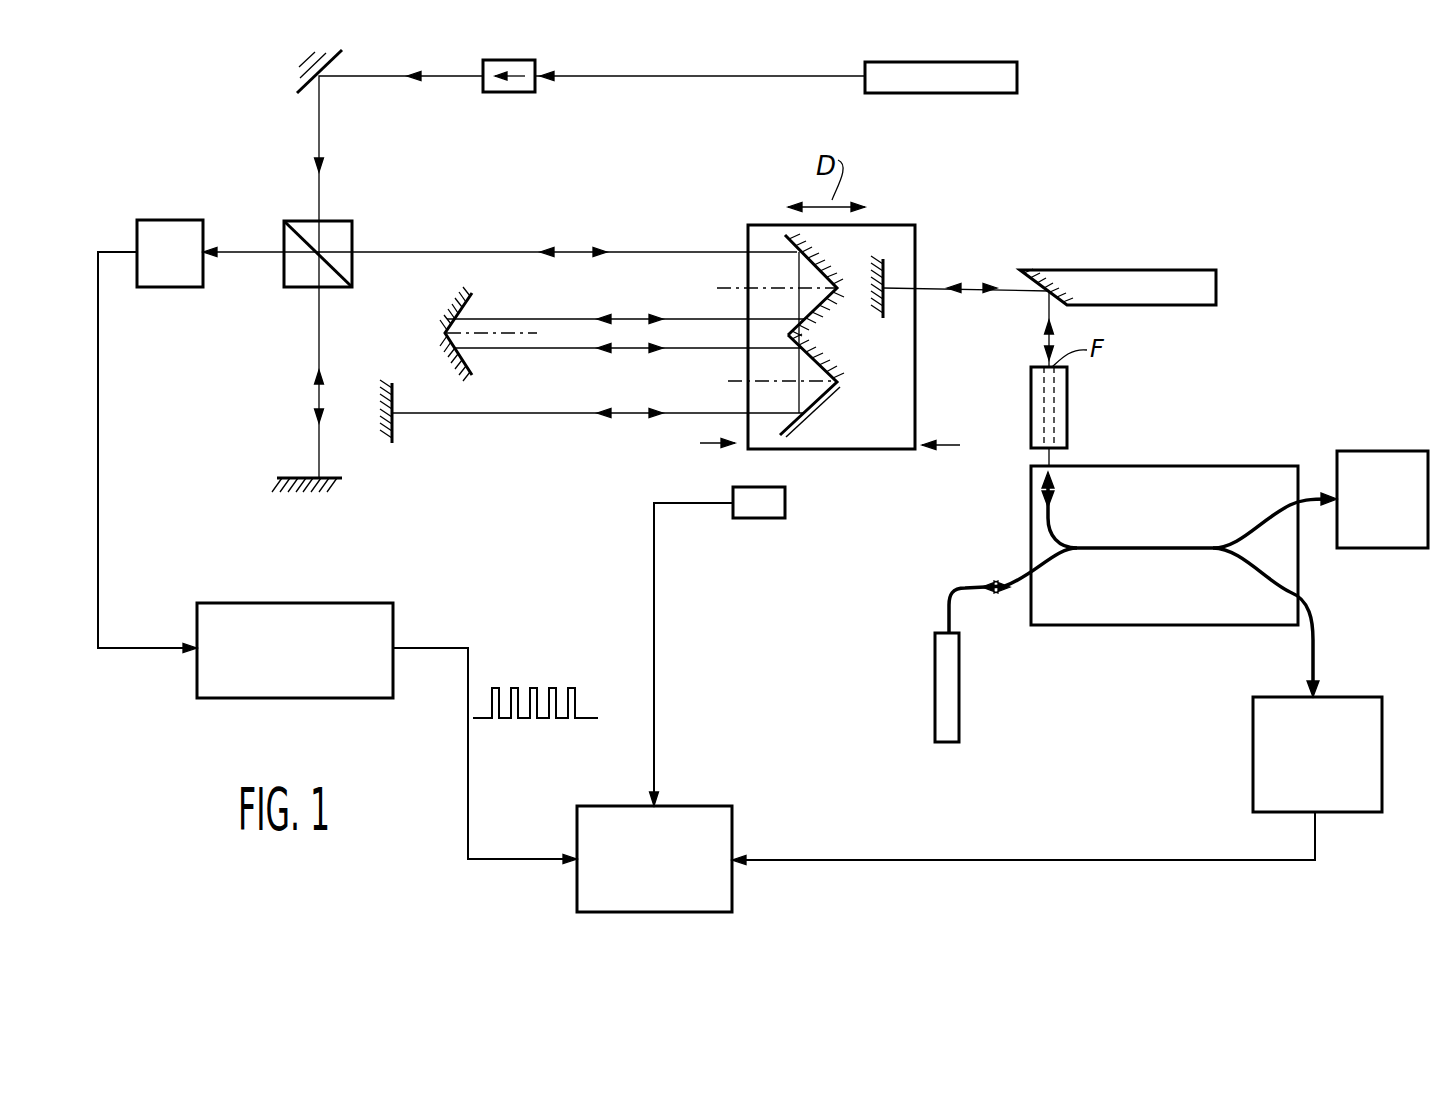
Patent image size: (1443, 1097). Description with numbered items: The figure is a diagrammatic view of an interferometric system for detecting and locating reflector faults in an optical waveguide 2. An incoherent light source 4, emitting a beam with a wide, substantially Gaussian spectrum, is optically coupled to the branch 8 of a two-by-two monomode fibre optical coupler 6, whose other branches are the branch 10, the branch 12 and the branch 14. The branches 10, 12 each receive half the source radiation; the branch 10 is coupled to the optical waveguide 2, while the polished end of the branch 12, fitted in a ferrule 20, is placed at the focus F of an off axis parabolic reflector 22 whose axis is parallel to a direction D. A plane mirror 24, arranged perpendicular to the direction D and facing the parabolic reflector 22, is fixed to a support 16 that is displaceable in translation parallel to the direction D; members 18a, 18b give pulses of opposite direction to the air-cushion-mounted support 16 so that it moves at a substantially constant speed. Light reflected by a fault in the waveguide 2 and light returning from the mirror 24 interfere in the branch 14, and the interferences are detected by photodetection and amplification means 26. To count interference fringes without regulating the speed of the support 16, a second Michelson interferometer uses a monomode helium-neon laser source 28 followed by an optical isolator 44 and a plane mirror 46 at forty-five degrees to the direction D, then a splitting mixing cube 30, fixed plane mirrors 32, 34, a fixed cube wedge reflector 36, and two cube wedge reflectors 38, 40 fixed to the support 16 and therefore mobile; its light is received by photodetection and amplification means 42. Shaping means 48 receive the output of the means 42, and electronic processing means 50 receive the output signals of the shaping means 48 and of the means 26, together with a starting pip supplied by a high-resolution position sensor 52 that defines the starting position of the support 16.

The optical waveguide 2 is at (958, 712).
The incoherent light source 4 is at (1383, 451).
The optical coupler 6 is at (1200, 465).
The coupler branch 8 is at (1258, 508).
The coupler branch 10 is at (950, 598).
The coupler branch 12 is at (1062, 532).
The coupler branch 14 is at (1315, 655).
The support 16 is at (838, 450).
The displacing member 18a is at (705, 443).
The displacing member 18b is at (930, 445).
The ferrule 20 is at (1067, 412).
The off axis parabolic reflector 22 is at (1165, 270).
The plane mirror 24 is at (872, 262).
The photodetection and amplification means 26 is at (1253, 725).
The monomode laser source 28 is at (985, 93).
The splitting mixing cube 30 is at (287, 287).
The plane mirror 32 is at (272, 490).
The plane mirror 34 is at (383, 443).
The cube wedge reflector 36 is at (433, 352).
The cube wedge reflector 38 is at (816, 308).
The cube wedge reflector 40 is at (812, 412).
The photodetection and amplification means 42 is at (178, 222).
The optical isolator 44 is at (530, 92).
The plane mirror 46 is at (308, 66).
The shaping means 48 is at (260, 610).
The electronic processing means 50 is at (698, 812).
The position sensor 52 is at (748, 518).